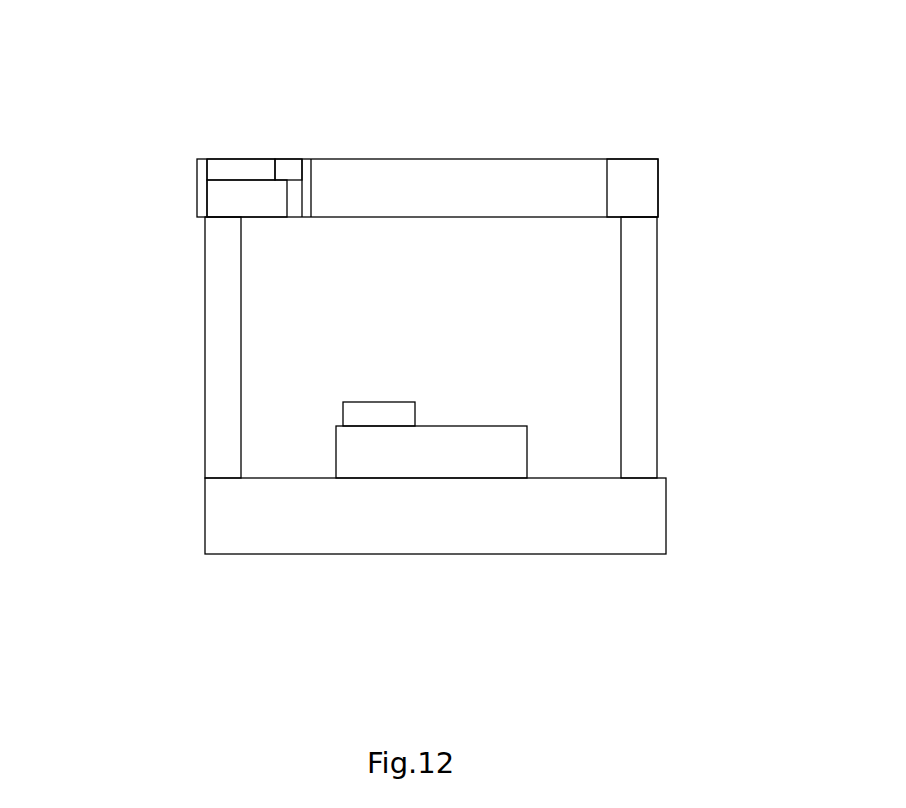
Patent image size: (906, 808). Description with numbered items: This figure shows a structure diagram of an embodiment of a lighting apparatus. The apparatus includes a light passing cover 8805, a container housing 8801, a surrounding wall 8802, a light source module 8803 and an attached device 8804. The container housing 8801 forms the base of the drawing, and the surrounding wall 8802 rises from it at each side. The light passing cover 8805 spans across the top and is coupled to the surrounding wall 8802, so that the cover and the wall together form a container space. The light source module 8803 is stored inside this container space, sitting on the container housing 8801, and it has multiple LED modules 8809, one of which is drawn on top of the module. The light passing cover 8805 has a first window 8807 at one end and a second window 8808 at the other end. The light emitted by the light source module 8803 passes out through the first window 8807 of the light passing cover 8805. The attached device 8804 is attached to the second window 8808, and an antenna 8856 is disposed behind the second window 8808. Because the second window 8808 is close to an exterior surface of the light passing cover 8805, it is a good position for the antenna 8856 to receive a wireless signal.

The container housing 8801 is at (650, 498).
The surrounding wall 8802 is at (223, 425).
The light source module 8803 is at (397, 448).
The attached device 8804 is at (245, 200).
The light passing cover 8805 is at (393, 178).
The first window 8807 is at (538, 173).
The second window 8808 is at (263, 168).
The LED modules 8809 is at (387, 405).
The antenna 8856 is at (290, 163).